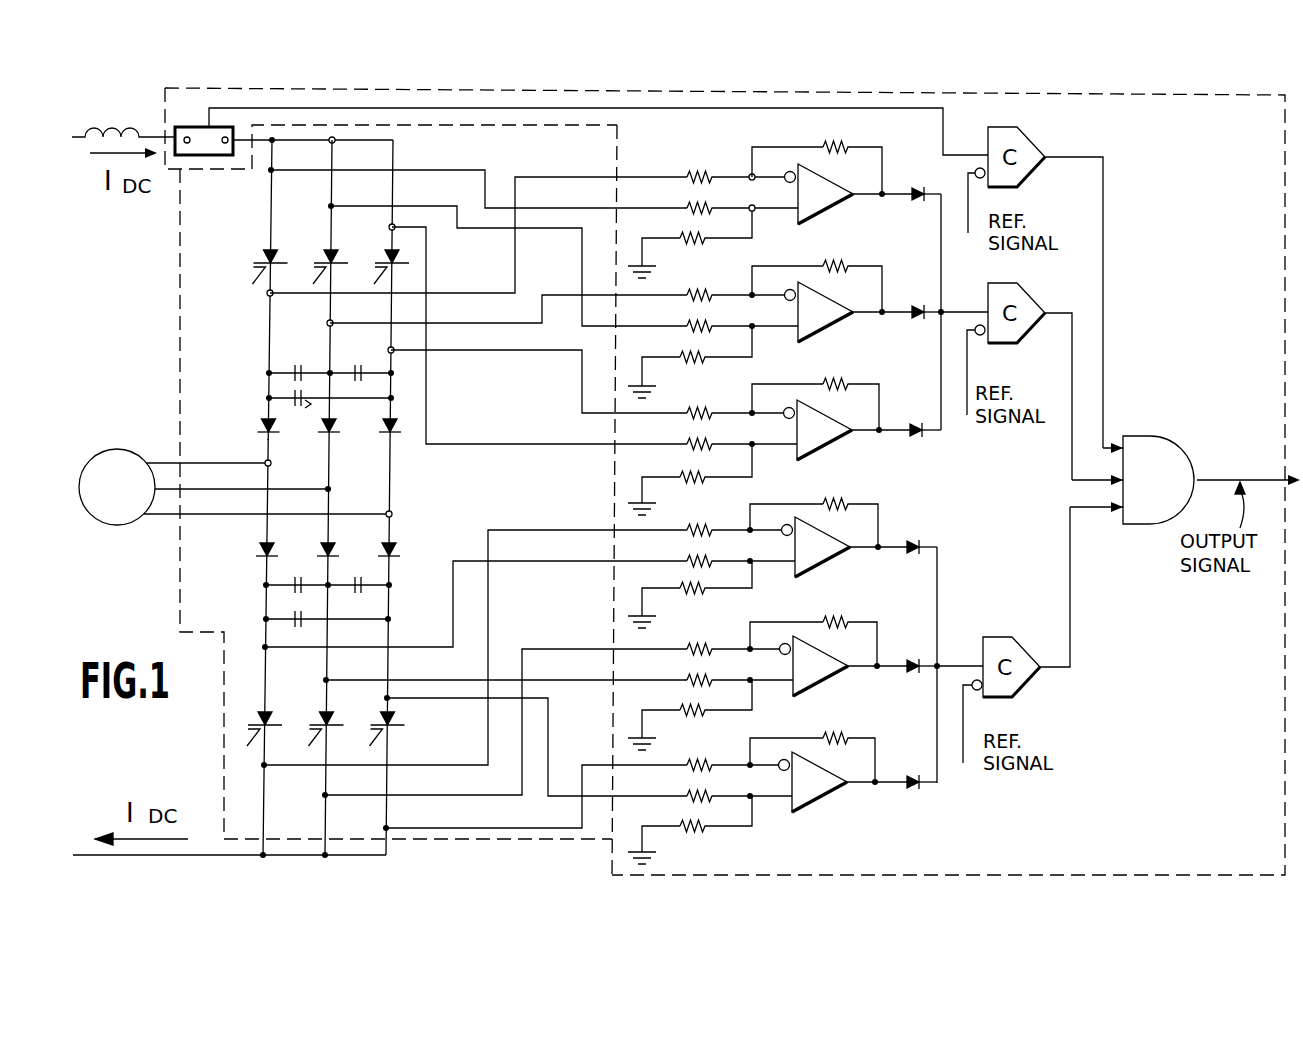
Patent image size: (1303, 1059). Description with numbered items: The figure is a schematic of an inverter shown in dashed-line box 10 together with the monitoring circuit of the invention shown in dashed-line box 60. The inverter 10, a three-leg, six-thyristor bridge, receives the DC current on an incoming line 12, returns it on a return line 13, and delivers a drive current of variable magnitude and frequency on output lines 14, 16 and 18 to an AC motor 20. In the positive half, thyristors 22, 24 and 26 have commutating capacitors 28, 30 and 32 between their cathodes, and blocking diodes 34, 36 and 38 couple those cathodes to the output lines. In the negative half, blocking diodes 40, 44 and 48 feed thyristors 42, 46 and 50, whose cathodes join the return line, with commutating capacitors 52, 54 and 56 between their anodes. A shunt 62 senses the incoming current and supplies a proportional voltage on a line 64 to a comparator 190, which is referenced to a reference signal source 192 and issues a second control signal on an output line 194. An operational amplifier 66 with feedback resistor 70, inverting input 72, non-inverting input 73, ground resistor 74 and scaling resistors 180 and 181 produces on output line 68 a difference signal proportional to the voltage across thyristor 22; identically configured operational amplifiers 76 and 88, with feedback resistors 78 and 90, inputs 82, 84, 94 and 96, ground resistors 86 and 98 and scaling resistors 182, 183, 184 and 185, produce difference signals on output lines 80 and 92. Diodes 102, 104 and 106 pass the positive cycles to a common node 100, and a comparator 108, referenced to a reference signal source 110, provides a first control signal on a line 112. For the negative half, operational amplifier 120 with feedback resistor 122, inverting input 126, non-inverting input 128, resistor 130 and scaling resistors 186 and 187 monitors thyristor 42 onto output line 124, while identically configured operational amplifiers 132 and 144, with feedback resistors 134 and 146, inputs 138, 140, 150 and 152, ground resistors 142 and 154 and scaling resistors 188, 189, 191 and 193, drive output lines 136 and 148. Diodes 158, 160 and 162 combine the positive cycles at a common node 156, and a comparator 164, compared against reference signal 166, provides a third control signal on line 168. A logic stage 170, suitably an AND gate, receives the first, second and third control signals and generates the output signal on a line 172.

The inverter 10 is at (470, 838).
The incoming line 12 is at (161, 135).
The return line 13 is at (210, 852).
The output line 14 is at (224, 460).
The output line 16 is at (304, 488).
The output line 18 is at (366, 511).
The AC motor 20 is at (148, 440).
The thyristor 22 is at (257, 256).
The thyristor 24 is at (319, 256).
The thyristor 26 is at (379, 256).
The commutating capacitor 28 is at (305, 368).
The commutating capacitor 30 is at (366, 368).
The commutating capacitor 32 is at (288, 427).
The blocking diode 34 is at (256, 428).
The blocking diode 36 is at (342, 432).
The blocking diode 38 is at (402, 432).
The blocking diode 40 is at (256, 548).
The thyristor 42 is at (271, 714).
The blocking diode 44 is at (336, 547).
The thyristor 46 is at (331, 716).
The blocking diode 48 is at (398, 548).
The thyristor 50 is at (404, 724).
The commutating capacitor 52 is at (308, 585).
The commutating capacitor 54 is at (368, 585).
The commutating capacitor 56 is at (286, 615).
The circuit 60 is at (613, 850).
The shunt 62 is at (208, 156).
The line 64 is at (691, 113).
The operational amplifier 66 is at (831, 182).
The output line 68 is at (882, 198).
The feedback resistor 70 is at (856, 145).
The inverting input 72 is at (760, 180).
The non-inverting input 73 is at (762, 212).
The resistor 74 is at (687, 228).
The operational amplifier 76 is at (833, 300).
The feedback resistor 78 is at (852, 264).
The output line 80 is at (882, 316).
The comparator input 82 is at (760, 299).
The comparator input 84 is at (762, 330).
The resistor 86 is at (677, 346).
The operational amplifier 88 is at (833, 417).
The feedback resistor 90 is at (843, 382).
The output line 92 is at (882, 434).
The comparator input 94 is at (762, 417).
The comparator input 96 is at (764, 448).
The resistor 98 is at (674, 464).
The common node 100 is at (942, 309).
The diode 102 is at (923, 189).
The diode 104 is at (913, 304).
The diode 106 is at (914, 420).
The comparator 108 is at (1027, 300).
The reference signal source 110 is at (968, 364).
The line 112 is at (1072, 357).
The operational amplifier 120 is at (833, 534).
The feedback resistor 122 is at (836, 502).
The output line 124 is at (880, 551).
The inverting input 126 is at (760, 534).
The non-inverting input 128 is at (764, 565).
The resistor 130 is at (677, 581).
The operational amplifier 132 is at (828, 650).
The feedback resistor 134 is at (842, 614).
The output line 136 is at (877, 670).
The comparator input 138 is at (760, 653).
The comparator input 140 is at (764, 684).
The resistor 142 is at (677, 700).
The operational amplifier 144 is at (828, 768).
The feedback resistor 146 is at (834, 738).
The output line 148 is at (875, 786).
The comparator input 150 is at (760, 769).
The comparator input 152 is at (764, 800).
The resistor 154 is at (679, 816).
The common node 156 is at (940, 659).
The diode 158 is at (916, 534).
The diode 160 is at (914, 656).
The diode 162 is at (911, 774).
The comparator 164 is at (1032, 632).
The reference signal 166 is at (965, 720).
The line 168 is at (1068, 668).
The logic stage 170 is at (1187, 428).
The line 172 is at (1217, 478).
The scaling resistor 180 is at (702, 167).
The scaling resistor 181 is at (692, 204).
The input resistor 182 is at (710, 294).
The input resistor 183 is at (678, 326).
The input resistor 184 is at (708, 411).
The input resistor 185 is at (680, 442).
The scaling resistor 186 is at (708, 528).
The scaling resistor 187 is at (676, 561).
The input resistor 188 is at (708, 646).
The input resistor 189 is at (676, 678).
The comparator 190 is at (1032, 148).
The input resistor 191 is at (706, 763).
The reference signal source 192 is at (968, 202).
The input resistor 193 is at (682, 796).
The output line 194 is at (1052, 160).